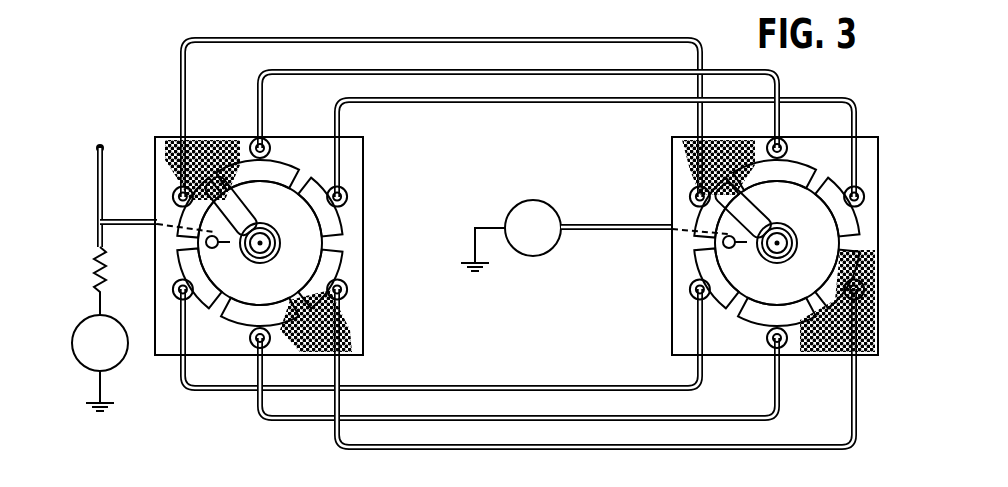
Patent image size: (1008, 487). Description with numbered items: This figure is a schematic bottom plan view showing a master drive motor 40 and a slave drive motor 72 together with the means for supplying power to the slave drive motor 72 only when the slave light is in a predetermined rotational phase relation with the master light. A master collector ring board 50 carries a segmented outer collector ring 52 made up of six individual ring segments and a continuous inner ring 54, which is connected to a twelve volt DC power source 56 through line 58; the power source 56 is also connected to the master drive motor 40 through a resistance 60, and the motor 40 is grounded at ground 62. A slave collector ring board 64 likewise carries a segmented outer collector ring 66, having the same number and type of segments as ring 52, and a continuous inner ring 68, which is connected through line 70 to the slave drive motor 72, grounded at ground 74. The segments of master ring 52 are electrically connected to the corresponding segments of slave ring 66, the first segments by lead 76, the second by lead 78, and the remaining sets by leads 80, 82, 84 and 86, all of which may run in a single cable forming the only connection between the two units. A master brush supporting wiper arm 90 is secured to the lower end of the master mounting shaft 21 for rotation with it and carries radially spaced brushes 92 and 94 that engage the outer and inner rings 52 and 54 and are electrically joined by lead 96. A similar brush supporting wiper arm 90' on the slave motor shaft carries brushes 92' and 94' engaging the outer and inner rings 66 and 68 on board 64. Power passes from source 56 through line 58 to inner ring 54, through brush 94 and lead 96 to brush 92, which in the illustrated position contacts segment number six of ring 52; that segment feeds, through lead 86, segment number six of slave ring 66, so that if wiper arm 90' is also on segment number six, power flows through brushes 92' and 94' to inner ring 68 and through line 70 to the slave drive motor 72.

The master mounting shaft 21 is at (262, 243).
The master drive motor 40 is at (124, 366).
The master collector ring board 50 is at (363, 298).
The segmented outer collector ring 52 is at (308, 193).
The continuous inner ring 54 is at (312, 256).
The power source 56 is at (100, 150).
The line 58 is at (123, 219).
The resistance 60 is at (98, 279).
The ground 62 is at (104, 418).
The slave collector ring board 64 is at (864, 137).
The segmented outer collector ring 66 is at (845, 262).
The continuous inner ring 68 is at (700, 262).
The line 70 is at (603, 224).
The slave drive motor 72 is at (540, 206).
The ground 74 is at (490, 268).
The lead 76 is at (478, 70).
The lead 78 is at (551, 104).
The lead 80 is at (470, 443).
The lead 82 is at (565, 415).
The lead 84 is at (438, 385).
The lead 86 is at (371, 42).
The master brush supporting wiper arm 90 is at (242, 211).
The brush supporting wiper arm 90' is at (781, 198).
The brush 92 is at (212, 132).
The brush 92' is at (735, 161).
The brush 94 is at (215, 326).
The brush 94' is at (829, 173).
The lead 96 is at (236, 172).